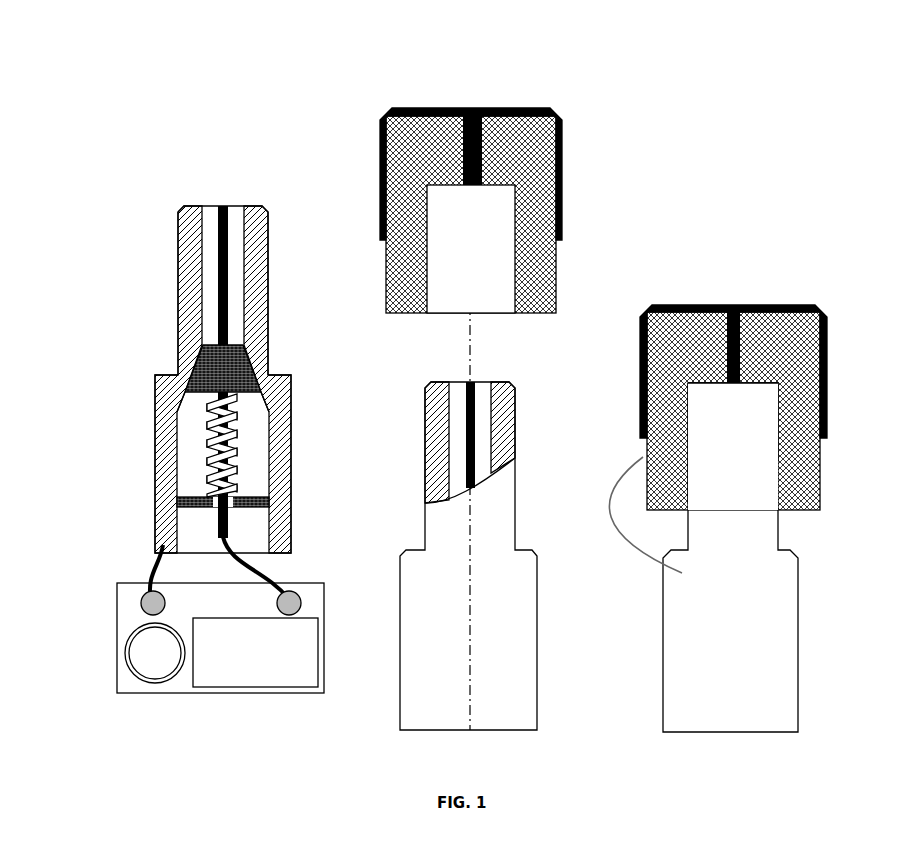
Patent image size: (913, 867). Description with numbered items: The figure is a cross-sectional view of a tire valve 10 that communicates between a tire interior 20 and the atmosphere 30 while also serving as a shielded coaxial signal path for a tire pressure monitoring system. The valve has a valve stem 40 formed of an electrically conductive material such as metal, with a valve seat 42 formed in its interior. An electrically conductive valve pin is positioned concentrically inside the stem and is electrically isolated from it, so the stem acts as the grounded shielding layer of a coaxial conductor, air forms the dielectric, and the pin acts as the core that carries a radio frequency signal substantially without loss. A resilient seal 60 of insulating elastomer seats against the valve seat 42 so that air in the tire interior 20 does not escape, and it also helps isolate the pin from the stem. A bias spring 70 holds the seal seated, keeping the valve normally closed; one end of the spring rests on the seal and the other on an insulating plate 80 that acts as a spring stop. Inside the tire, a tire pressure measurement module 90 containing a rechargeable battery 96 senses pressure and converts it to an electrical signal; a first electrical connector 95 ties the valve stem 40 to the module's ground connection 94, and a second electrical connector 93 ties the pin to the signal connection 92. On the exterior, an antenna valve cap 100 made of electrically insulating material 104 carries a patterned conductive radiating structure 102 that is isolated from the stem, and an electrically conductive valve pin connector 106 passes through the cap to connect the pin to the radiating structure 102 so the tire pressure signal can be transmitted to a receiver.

The tire valve 10 is at (473, 427).
The tire interior 20 is at (87, 656).
The atmosphere 30 is at (160, 216).
The valve stem 40 is at (262, 300).
The valve seat 42 is at (255, 358).
The resilient seal 60 is at (205, 365).
The bias spring 70 is at (212, 440).
The plate 80 is at (194, 497).
The tire pressure measurement module 90 is at (178, 683).
The signal connection 92 is at (293, 598).
The second electrical connector 93 is at (285, 577).
The ground connection 94 is at (143, 598).
The first electrical connector 95 is at (145, 575).
The rechargeable battery 96 is at (146, 673).
The antenna valve cap 100 is at (525, 103).
The conductive radiating structure 102 is at (445, 108).
The electrically insulating material 104 is at (548, 287).
The valve pin connector 106 is at (432, 145).